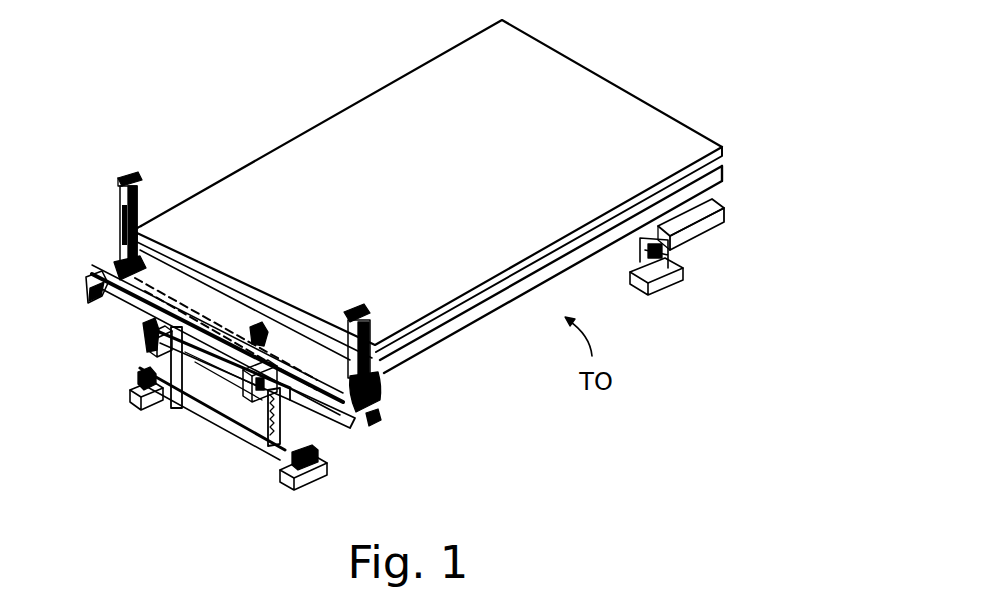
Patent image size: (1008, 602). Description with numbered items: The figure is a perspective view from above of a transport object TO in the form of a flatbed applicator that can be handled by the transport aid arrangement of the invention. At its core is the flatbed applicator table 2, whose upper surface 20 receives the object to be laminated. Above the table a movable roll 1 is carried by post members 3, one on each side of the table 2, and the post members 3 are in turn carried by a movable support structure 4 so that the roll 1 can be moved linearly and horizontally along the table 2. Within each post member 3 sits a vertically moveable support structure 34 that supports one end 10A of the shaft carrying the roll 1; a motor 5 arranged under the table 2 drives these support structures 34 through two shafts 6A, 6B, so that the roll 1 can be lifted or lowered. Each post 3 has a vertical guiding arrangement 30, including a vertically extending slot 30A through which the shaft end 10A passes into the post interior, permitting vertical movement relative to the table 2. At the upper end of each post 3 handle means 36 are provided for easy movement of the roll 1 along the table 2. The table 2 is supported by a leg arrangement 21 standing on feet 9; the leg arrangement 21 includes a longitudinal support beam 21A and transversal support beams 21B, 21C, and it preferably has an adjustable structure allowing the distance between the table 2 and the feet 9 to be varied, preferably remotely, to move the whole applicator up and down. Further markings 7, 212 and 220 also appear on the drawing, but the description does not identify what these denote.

The roll 1 is at (181, 230).
The flatbed applicator table 2 is at (302, 185).
The post member 3 is at (110, 212).
The support structure 4 is at (343, 420).
The motor 5 is at (250, 340).
The shaft 6A is at (147, 317).
The shaft 6B is at (243, 420).
The groove 7 is at (238, 338).
The feet 9 is at (280, 500).
The shaft end 10A is at (118, 218).
The upper surface 20 is at (332, 130).
The leg arrangement 21 is at (309, 438).
The longitudinal support beam 21A is at (147, 407).
The transversal support beam 21B is at (230, 433).
The transversal support beam 21C is at (168, 407).
The vertical guiding arrangement 30 is at (105, 262).
The vertically extending slot 30A is at (142, 212).
The vertically moveable support structure 34 is at (380, 390).
The handle means 36 is at (130, 168).
The support bar 212 is at (720, 233).
The lower plate layer 220 is at (720, 165).